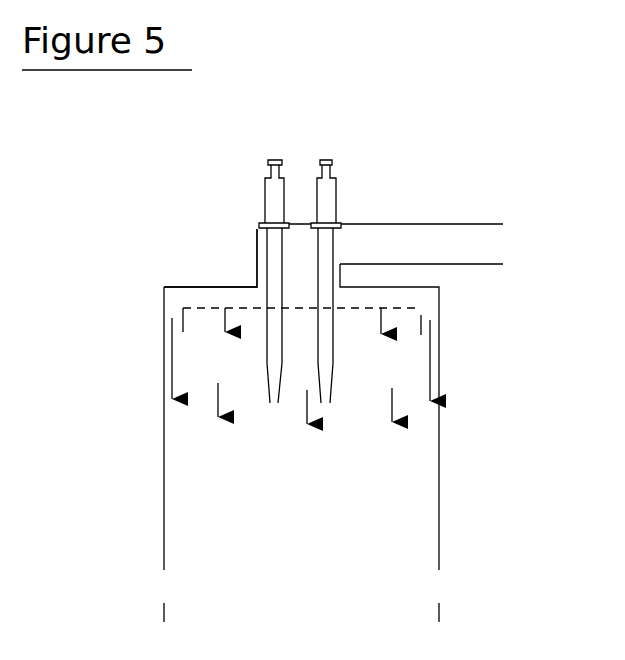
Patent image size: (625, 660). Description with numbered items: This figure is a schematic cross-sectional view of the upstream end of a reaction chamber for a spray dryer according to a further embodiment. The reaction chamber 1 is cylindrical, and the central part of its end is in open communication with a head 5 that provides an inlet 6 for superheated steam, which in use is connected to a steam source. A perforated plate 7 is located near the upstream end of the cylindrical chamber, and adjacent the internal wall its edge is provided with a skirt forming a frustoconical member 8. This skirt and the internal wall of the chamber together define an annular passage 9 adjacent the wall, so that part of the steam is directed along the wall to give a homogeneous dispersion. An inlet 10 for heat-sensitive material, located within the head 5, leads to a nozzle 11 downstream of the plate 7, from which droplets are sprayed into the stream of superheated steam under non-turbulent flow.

The reaction chamber 1 is at (438, 543).
The head 5 is at (257, 253).
The inlet 6 is at (482, 248).
The perforated plate 7 is at (198, 307).
The frustoconical member 8 is at (183, 312).
The annular passage 9 is at (173, 315).
The inlet 10 is at (302, 167).
The nozzle 11 is at (293, 384).